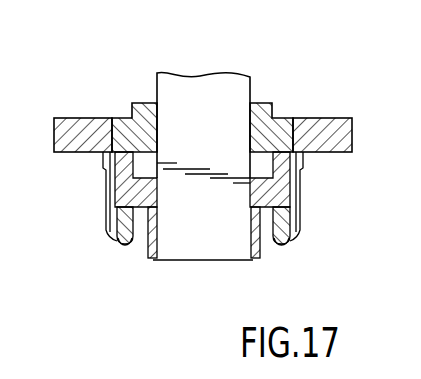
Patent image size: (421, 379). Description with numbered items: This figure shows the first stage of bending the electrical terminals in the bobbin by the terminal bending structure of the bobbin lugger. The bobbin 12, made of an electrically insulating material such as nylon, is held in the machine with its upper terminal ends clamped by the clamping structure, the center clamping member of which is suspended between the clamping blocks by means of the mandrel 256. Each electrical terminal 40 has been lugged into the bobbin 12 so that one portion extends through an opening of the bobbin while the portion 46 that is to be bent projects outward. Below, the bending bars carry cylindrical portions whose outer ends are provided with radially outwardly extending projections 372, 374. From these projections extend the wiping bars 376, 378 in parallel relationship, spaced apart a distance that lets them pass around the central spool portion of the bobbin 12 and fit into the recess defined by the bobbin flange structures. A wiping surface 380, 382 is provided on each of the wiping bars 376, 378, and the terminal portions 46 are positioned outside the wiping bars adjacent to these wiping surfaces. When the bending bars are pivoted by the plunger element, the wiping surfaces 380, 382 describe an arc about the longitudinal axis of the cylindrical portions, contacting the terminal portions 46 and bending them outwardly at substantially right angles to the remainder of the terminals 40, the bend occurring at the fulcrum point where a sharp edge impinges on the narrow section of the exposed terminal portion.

The bobbin 12 is at (253, 260).
The electrical terminal 40 is at (112, 118).
The terminal portion 46 is at (113, 204).
The mandrel 256 is at (247, 77).
The radially outwardly extending projection 372 is at (113, 222).
The radially outwardly extending projection 374 is at (300, 226).
The wiping bar 376 is at (124, 246).
The wiping bar 378 is at (284, 246).
The wiping surface 380 is at (110, 236).
The wiping surface 382 is at (300, 236).